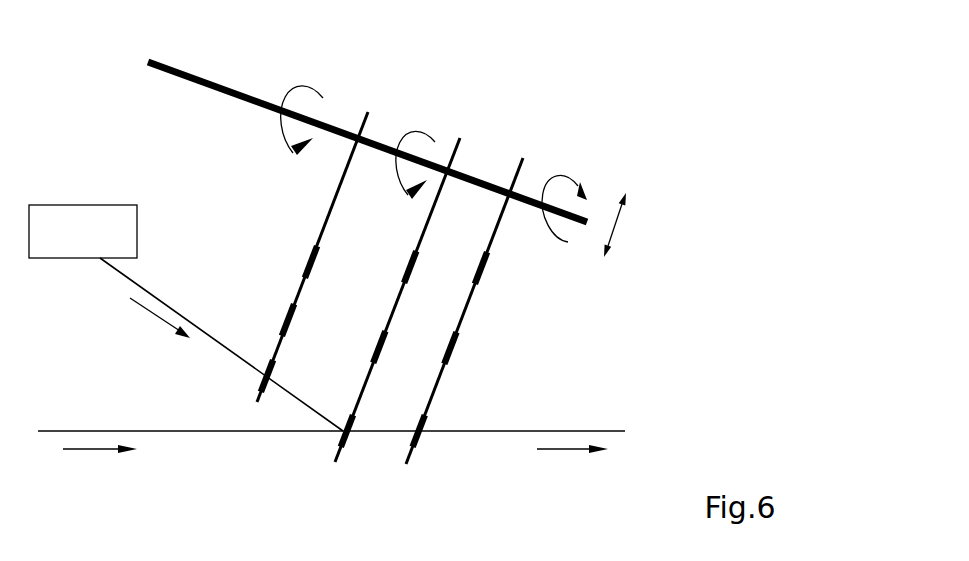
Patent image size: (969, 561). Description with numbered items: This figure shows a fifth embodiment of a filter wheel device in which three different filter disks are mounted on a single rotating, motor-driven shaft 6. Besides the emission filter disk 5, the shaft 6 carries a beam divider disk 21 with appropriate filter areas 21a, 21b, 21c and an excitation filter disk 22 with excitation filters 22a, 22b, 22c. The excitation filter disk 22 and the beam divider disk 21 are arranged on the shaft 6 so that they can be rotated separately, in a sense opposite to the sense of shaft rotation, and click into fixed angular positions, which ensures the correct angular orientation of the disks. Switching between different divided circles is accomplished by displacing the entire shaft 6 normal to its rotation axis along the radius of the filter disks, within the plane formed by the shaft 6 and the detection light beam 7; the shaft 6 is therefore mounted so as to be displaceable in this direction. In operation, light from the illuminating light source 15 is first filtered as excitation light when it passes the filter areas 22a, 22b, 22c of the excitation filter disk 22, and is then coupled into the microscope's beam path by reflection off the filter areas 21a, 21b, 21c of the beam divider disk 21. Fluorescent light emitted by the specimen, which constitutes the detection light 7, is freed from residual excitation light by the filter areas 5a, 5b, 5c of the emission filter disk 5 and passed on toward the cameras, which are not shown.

The emission filter disk 5 is at (526, 172).
The filter area of the emission filter disk 5a is at (418, 442).
The filter area of the emission filter disk 5b is at (450, 350).
The filter area of the emission filter disk 5c is at (482, 277).
The shaft 6 is at (150, 63).
The detection light beam 7 is at (195, 432).
The illuminating light source 15 is at (186, 318).
The beam divider disk 21 is at (462, 150).
The filter area of the beam divider disk 21a is at (344, 442).
The filter area of the beam divider disk 21b is at (377, 347).
The filter area of the beam divider disk 21c is at (408, 272).
The excitation filter disk 22 is at (372, 121).
The excitation filter 22a is at (268, 390).
The excitation filter 22b is at (283, 322).
The excitation filter 22c is at (306, 258).